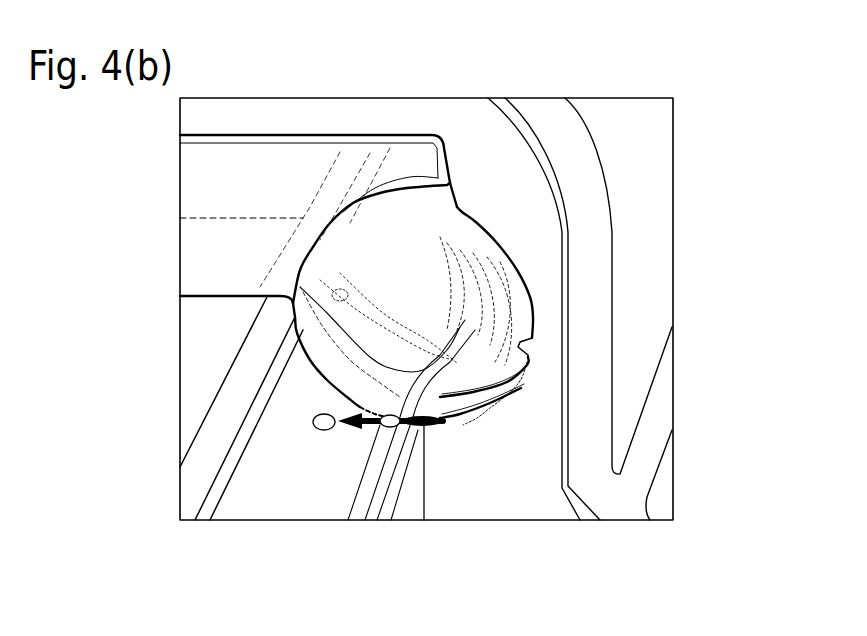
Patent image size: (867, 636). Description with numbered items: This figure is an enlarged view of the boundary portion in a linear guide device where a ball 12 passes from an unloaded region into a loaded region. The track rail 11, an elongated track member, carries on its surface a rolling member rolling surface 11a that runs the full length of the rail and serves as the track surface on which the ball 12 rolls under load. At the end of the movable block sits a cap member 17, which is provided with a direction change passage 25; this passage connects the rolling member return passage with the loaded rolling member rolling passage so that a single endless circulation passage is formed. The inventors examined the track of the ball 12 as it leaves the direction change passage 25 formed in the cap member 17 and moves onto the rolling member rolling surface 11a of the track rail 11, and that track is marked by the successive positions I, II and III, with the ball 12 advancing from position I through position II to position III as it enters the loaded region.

The track rail 11 is at (205, 345).
The rolling member rolling surface 11a is at (277, 471).
The ball 12 is at (393, 247).
The cap member 17 is at (647, 228).
The direction change passage 25 is at (520, 342).
The first track position I is at (428, 427).
The second track position II is at (381, 426).
The third track position III is at (323, 431).